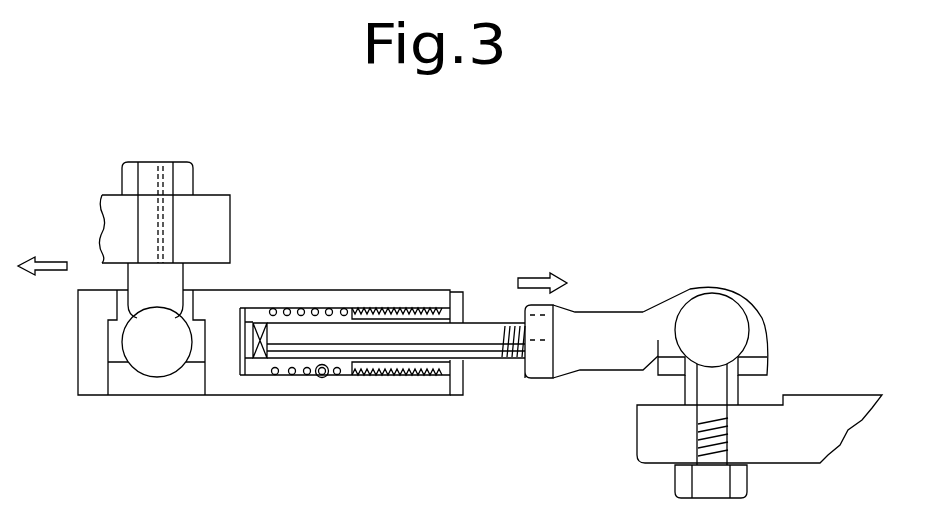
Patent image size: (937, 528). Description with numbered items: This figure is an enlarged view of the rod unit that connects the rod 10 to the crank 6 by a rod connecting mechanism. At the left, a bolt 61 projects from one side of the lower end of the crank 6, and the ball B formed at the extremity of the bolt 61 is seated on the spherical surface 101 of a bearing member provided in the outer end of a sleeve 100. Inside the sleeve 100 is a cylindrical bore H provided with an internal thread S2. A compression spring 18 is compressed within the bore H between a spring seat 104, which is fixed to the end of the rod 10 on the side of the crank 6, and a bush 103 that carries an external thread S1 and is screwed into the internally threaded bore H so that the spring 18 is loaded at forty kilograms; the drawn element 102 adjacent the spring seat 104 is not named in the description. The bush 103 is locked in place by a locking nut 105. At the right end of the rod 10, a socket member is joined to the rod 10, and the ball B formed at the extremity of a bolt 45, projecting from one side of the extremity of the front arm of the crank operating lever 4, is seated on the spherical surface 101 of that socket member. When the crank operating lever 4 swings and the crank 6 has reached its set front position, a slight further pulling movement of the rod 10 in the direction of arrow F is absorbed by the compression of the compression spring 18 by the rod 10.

The bolt 61 is at (150, 217).
The crank 6 is at (222, 212).
The arrow F is at (292, 262).
The ball B is at (178, 328).
The spherical surface 101 is at (148, 367).
The sleeve 100 is at (348, 384).
The spring seat 104 is at (252, 372).
The spring seat 102 is at (252, 320).
The compression spring 18 is at (315, 308).
The cylindrical bore H is at (322, 378).
The locking nut 105 is at (412, 300).
The internal thread S2 is at (382, 310).
The external thread S1 is at (385, 377).
The bush 103 is at (440, 307).
The rod 10 is at (485, 350).
The bolt 45 is at (695, 452).
The crank operating lever 4 is at (792, 455).